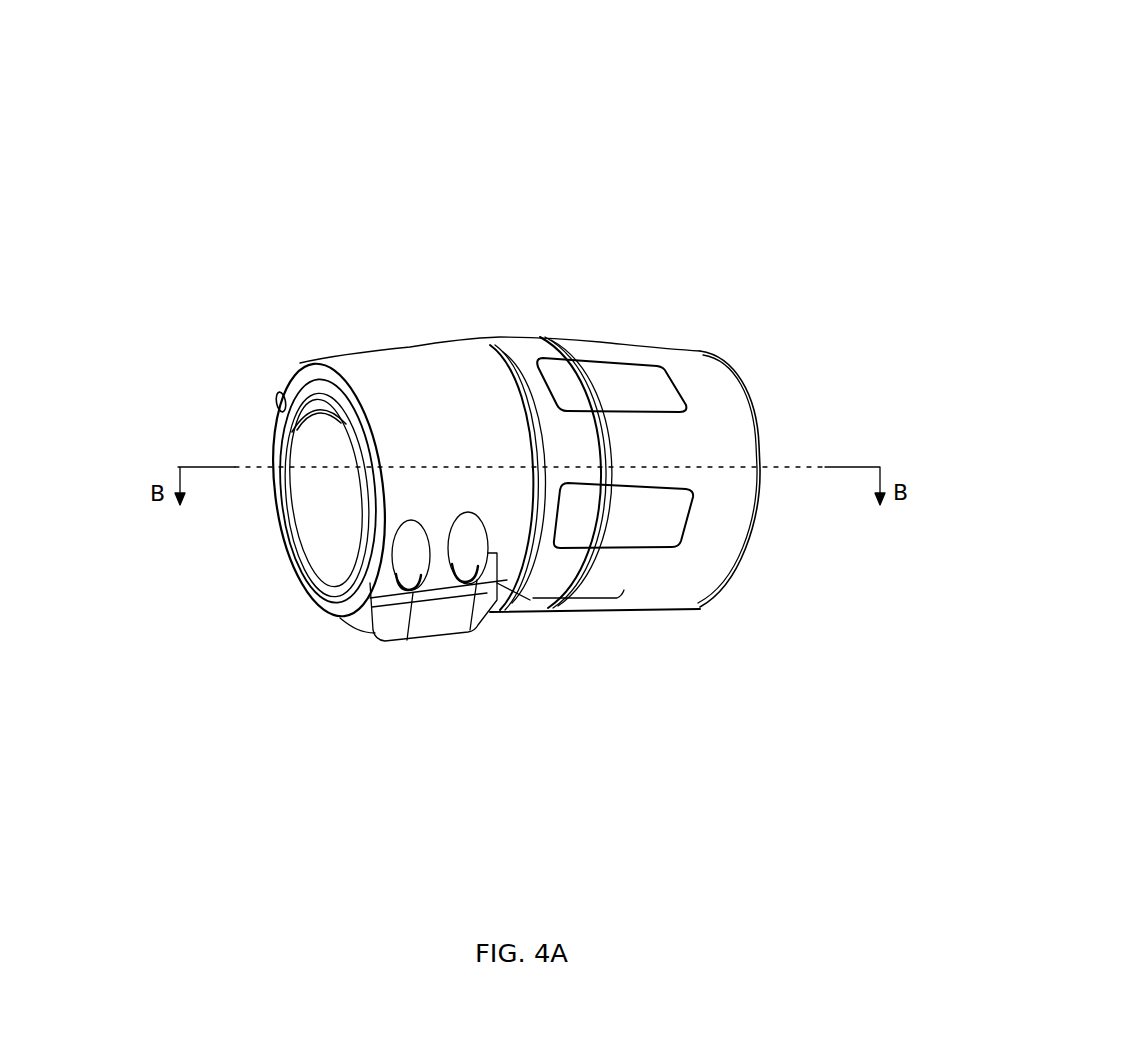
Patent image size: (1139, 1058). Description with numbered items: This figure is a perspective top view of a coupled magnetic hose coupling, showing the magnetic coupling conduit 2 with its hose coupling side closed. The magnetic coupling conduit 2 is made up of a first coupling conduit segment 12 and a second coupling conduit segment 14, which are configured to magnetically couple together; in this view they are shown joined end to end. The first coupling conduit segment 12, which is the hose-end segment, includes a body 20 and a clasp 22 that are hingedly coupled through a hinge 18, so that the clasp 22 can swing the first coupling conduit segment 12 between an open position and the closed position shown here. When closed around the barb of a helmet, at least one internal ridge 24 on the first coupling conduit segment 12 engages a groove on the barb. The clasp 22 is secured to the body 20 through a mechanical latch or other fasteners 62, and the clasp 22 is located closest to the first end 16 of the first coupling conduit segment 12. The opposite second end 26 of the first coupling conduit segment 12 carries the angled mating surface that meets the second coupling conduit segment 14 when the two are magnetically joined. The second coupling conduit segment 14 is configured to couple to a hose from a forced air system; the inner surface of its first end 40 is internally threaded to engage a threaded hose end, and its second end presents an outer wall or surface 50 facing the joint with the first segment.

The magnetic coupling conduit 2 is at (1029, 150).
The first coupling conduit segment 12 is at (346, 263).
The second coupling conduit segment 14 is at (696, 330).
The first end 16 is at (347, 372).
The hinge 18 is at (283, 392).
The body 20 is at (310, 537).
The clasp 22 is at (398, 500).
The internal ridge 24 is at (313, 413).
The second end 26 is at (410, 360).
The first end 40 is at (713, 562).
The outer wall or surface 50 is at (729, 443).
The fasteners 62 is at (465, 578).